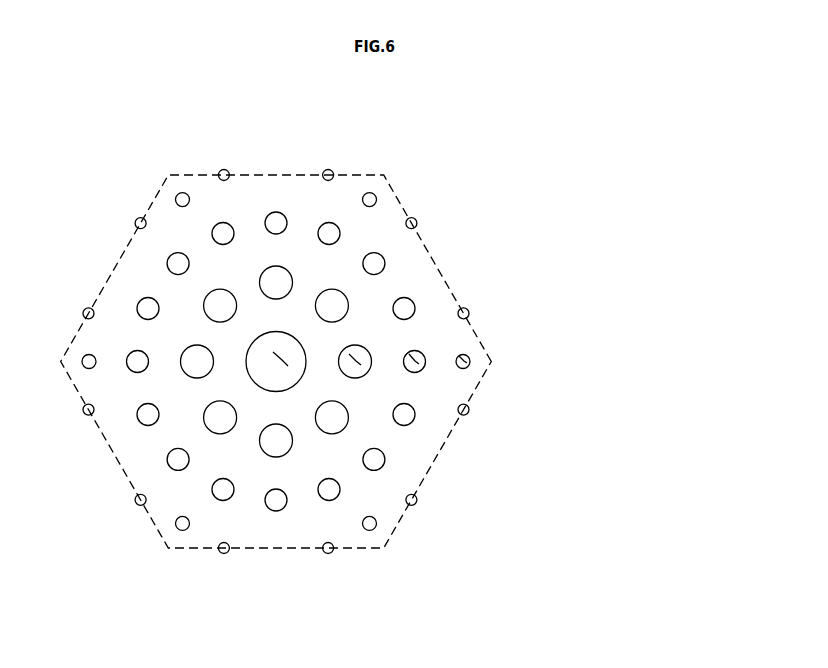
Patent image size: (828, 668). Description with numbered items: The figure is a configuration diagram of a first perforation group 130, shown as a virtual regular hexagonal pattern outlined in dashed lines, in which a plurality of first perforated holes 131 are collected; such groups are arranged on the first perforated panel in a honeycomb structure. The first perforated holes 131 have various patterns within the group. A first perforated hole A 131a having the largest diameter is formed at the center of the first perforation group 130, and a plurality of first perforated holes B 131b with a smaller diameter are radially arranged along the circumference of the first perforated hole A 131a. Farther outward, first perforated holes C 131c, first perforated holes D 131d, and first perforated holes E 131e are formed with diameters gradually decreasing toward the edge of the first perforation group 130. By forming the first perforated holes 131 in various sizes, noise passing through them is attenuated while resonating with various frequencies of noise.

The first perforation group 130 is at (277, 173).
The first perforated hole 131 is at (528, 190).
The first perforated hole A 131a is at (283, 358).
The first perforated hole B 131b is at (357, 358).
The first perforated hole C 131c is at (416, 359).
The first perforated hole D 131d is at (464, 360).
The first perforated hole E 131e is at (468, 411).